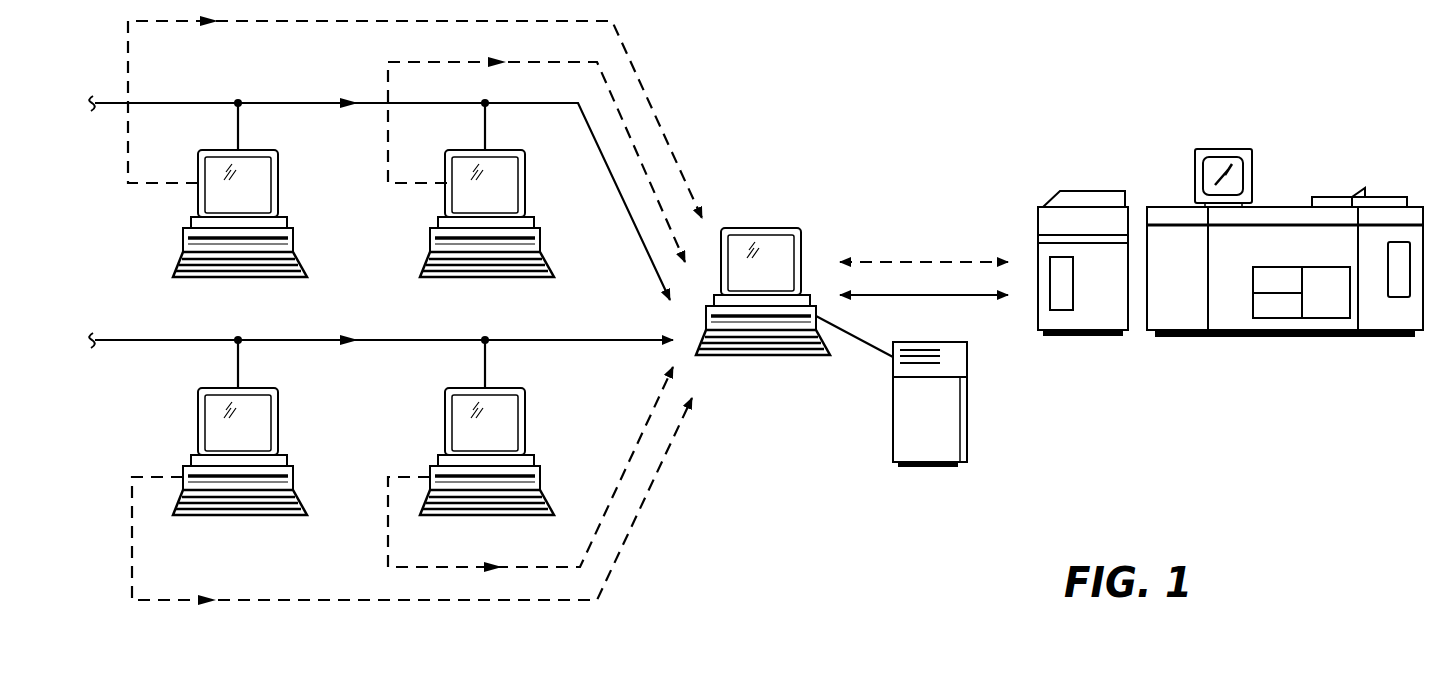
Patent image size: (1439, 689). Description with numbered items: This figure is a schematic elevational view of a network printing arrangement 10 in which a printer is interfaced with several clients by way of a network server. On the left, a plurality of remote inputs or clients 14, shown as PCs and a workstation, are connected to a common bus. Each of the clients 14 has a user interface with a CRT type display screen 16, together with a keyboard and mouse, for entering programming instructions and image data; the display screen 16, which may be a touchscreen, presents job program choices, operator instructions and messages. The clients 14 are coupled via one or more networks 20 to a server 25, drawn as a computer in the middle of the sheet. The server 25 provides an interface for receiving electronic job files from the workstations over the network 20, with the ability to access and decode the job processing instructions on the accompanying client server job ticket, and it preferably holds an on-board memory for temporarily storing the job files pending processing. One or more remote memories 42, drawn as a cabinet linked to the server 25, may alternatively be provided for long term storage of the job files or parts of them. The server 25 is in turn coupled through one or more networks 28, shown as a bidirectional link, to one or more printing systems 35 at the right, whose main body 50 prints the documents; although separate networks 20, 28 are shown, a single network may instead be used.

The network printing arrangement 10 is at (743, 92).
The clients 14 is at (378, 350).
The display screen 16 is at (505, 172).
The network 20 is at (663, 290).
The server 25 is at (762, 228).
The network 28 is at (930, 296).
The printing system 35 is at (1230, 253).
The remote memory 42 is at (893, 415).
The printer main body 50 is at (1232, 308).